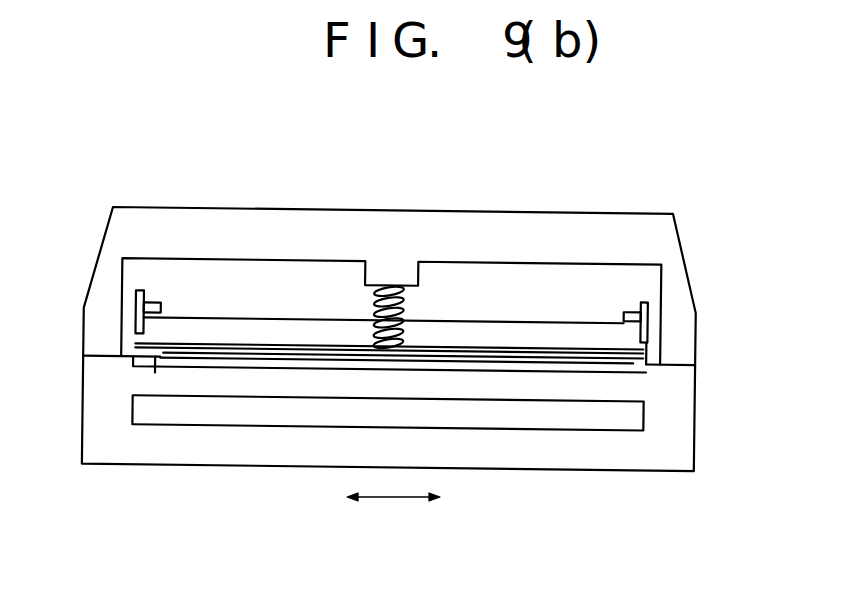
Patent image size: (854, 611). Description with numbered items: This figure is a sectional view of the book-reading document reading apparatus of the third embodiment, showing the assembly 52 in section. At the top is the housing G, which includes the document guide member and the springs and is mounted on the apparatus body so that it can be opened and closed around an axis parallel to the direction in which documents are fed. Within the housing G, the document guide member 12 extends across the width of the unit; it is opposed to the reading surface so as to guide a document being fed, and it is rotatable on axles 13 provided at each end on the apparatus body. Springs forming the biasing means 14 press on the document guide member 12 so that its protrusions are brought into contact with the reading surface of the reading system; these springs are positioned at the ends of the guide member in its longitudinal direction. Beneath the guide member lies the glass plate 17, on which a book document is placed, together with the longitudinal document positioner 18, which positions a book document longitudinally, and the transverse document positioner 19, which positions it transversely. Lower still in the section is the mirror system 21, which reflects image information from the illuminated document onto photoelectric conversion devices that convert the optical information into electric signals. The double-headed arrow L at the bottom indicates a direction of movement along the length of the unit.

The linear motion guide unit 52 is at (421, 194).
The housing G is at (192, 236).
The document guide member 12 is at (525, 330).
The axles 13 is at (135, 305).
The biasing means 14 is at (392, 285).
The glass plate 17 is at (227, 363).
The longitudinal document positioner 18 is at (633, 362).
The transverse document positioner 19 is at (158, 356).
The mirror system 21 is at (305, 418).
The direction of movement L is at (393, 512).